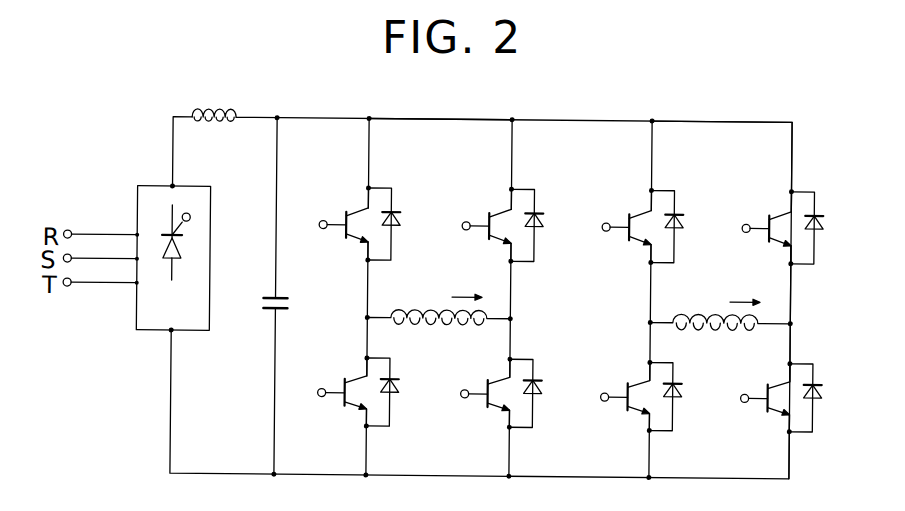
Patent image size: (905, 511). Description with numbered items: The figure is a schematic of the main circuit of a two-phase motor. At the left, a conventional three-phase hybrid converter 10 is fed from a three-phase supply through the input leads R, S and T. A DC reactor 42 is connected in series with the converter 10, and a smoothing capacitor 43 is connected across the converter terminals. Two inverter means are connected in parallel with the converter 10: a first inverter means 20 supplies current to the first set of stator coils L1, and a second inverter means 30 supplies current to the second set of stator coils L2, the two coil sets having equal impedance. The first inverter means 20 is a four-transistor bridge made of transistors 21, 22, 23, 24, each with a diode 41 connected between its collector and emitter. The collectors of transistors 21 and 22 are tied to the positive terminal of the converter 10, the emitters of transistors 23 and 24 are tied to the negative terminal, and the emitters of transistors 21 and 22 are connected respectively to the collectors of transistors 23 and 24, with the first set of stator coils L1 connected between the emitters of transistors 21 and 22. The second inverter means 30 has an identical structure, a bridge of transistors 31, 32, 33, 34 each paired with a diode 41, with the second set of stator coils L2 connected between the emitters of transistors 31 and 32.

The 3-phase hybrid converter 10 is at (151, 189).
The first inverter means 20 is at (443, 97).
The second inverter means 30 is at (721, 103).
The transistor 21 is at (360, 209).
The transistor 22 is at (506, 208).
The transistor 23 is at (363, 375).
The transistor 24 is at (488, 382).
The transistor 31 is at (628, 216).
The transistor 32 is at (770, 216).
The transistor 33 is at (628, 387).
The transistor 34 is at (770, 389).
The diode 41 is at (402, 216).
The DC reactor 42 is at (238, 116).
The smoothing capacitor 43 is at (265, 309).
The first set of stator coils L1 is at (427, 307).
The second set of stator coils L2 is at (704, 312).